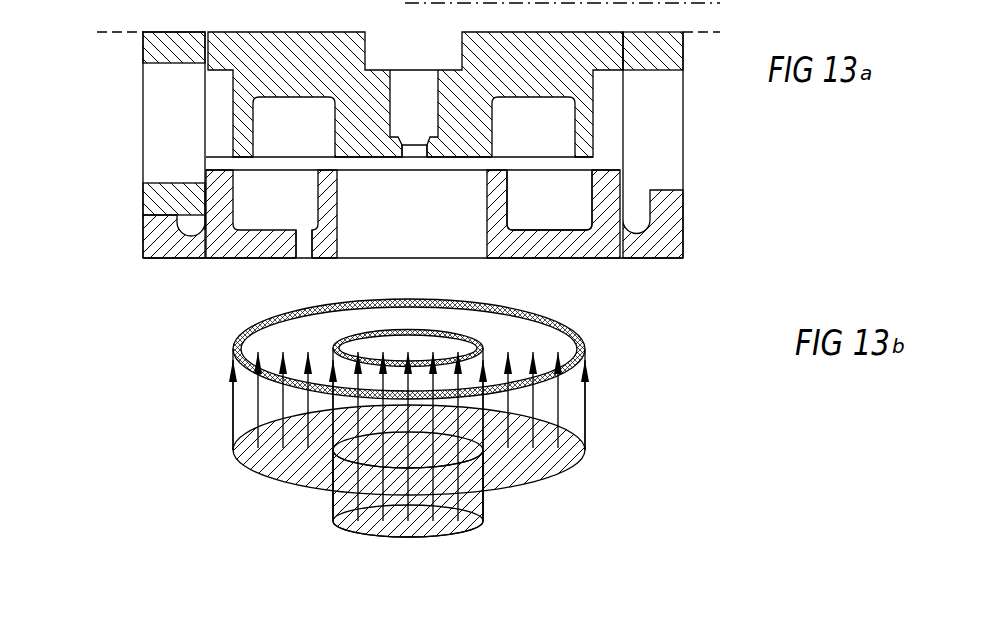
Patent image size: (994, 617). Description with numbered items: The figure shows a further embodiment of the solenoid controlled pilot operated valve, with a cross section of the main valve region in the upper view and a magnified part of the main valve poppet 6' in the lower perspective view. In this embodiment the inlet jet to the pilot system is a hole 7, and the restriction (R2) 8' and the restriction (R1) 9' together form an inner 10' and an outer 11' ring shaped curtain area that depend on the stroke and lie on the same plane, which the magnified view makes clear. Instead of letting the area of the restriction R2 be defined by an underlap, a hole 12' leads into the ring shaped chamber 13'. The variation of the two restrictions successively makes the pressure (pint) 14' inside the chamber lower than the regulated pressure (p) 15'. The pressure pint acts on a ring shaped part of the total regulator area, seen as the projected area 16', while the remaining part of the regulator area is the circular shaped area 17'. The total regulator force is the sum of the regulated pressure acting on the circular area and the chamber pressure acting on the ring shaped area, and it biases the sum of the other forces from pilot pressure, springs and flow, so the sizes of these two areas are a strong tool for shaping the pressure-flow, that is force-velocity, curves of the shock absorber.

In FIG. 13A, the main valve poppet 6' is at (514, 94).
In FIG. 13A, the gate pin 7 is at (413, 160).
In FIG. 13A, the restriction (R2) 8' is at (322, 211).
In FIG. 13A, the restriction (R1) 9' is at (372, 145).
In FIG. 13A, the hole 12' is at (187, 290).
In FIG. 13A, the ring shaped chamber 13' is at (672, 196).
In FIG. 13B, the inner ring shaped curtain area 10' is at (570, 293).
In FIG. 13B, the outer ring shaped curtain area 11' is at (513, 337).
In FIG. 13B, the pressure (pint) 14' is at (518, 435).
In FIG. 13B, the regulated pressure (p) 15' is at (523, 442).
In FIG. 13B, the projected ring shaped regulator area (Ad) 16' is at (521, 450).
In FIG. 13B, the circular shaped regulator area (A2) 17' is at (290, 502).